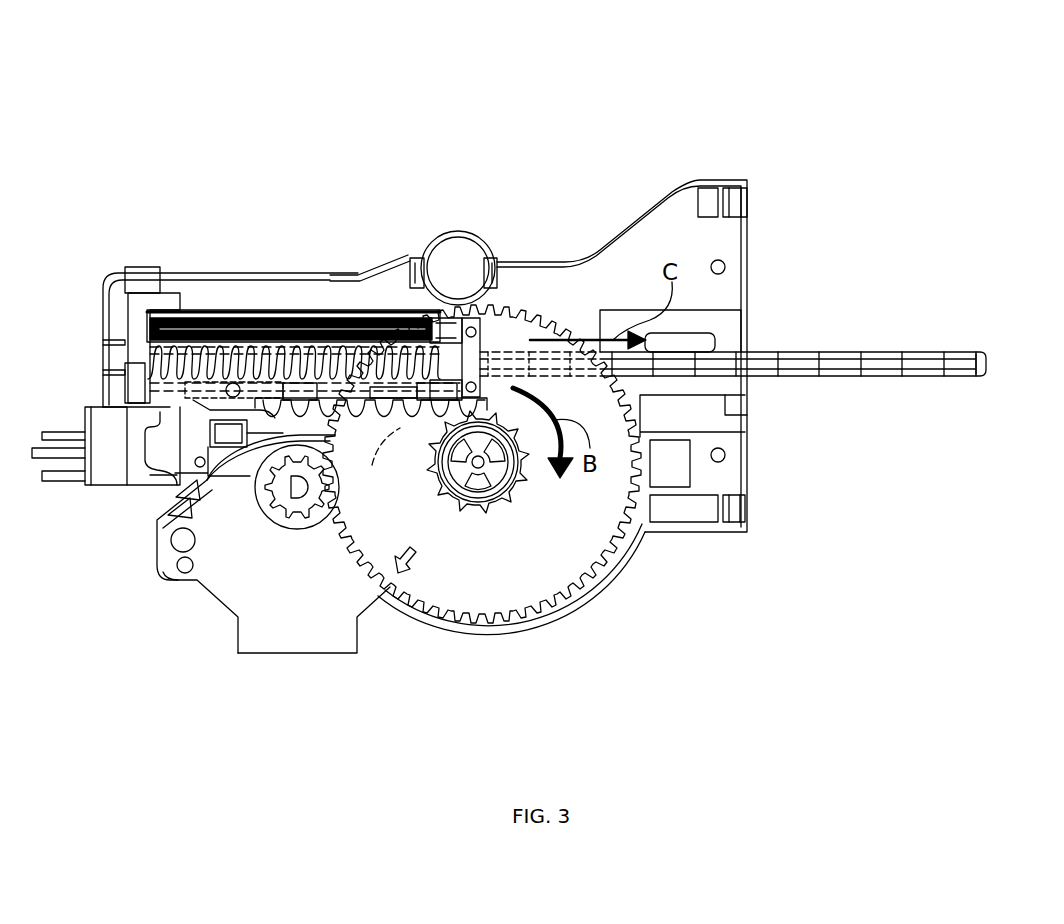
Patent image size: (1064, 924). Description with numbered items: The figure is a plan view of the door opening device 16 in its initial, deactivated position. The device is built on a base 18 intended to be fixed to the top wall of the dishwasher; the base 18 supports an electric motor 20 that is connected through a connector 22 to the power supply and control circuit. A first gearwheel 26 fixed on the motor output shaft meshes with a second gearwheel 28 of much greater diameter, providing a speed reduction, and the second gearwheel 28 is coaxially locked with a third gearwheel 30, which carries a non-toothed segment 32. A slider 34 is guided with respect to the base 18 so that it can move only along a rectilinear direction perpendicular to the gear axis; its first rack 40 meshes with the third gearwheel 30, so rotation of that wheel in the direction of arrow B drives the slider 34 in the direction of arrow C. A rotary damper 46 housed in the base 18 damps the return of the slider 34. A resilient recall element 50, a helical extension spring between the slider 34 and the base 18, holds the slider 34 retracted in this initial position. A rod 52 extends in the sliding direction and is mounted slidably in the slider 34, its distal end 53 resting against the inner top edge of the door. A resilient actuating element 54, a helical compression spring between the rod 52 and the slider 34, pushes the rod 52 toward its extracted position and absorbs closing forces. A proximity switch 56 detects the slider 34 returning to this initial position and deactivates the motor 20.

The opening device 16 is at (838, 108).
The base 18 is at (716, 178).
The electric motor 20 is at (222, 607).
The connector 22 is at (157, 448).
The first gearwheel 26 is at (303, 517).
The second gearwheel 28 is at (478, 618).
The third gearwheel 30 is at (462, 505).
The non-toothed segment 32 is at (527, 428).
The slider 34 is at (483, 338).
The first rack 40 is at (377, 460).
The rotary damper 46 is at (452, 265).
The resilient recall element 50 is at (210, 320).
The rod 52 is at (832, 350).
The distal end 53 is at (987, 365).
The resilient actuating element 54 is at (317, 365).
The proximity switch 56 is at (228, 437).